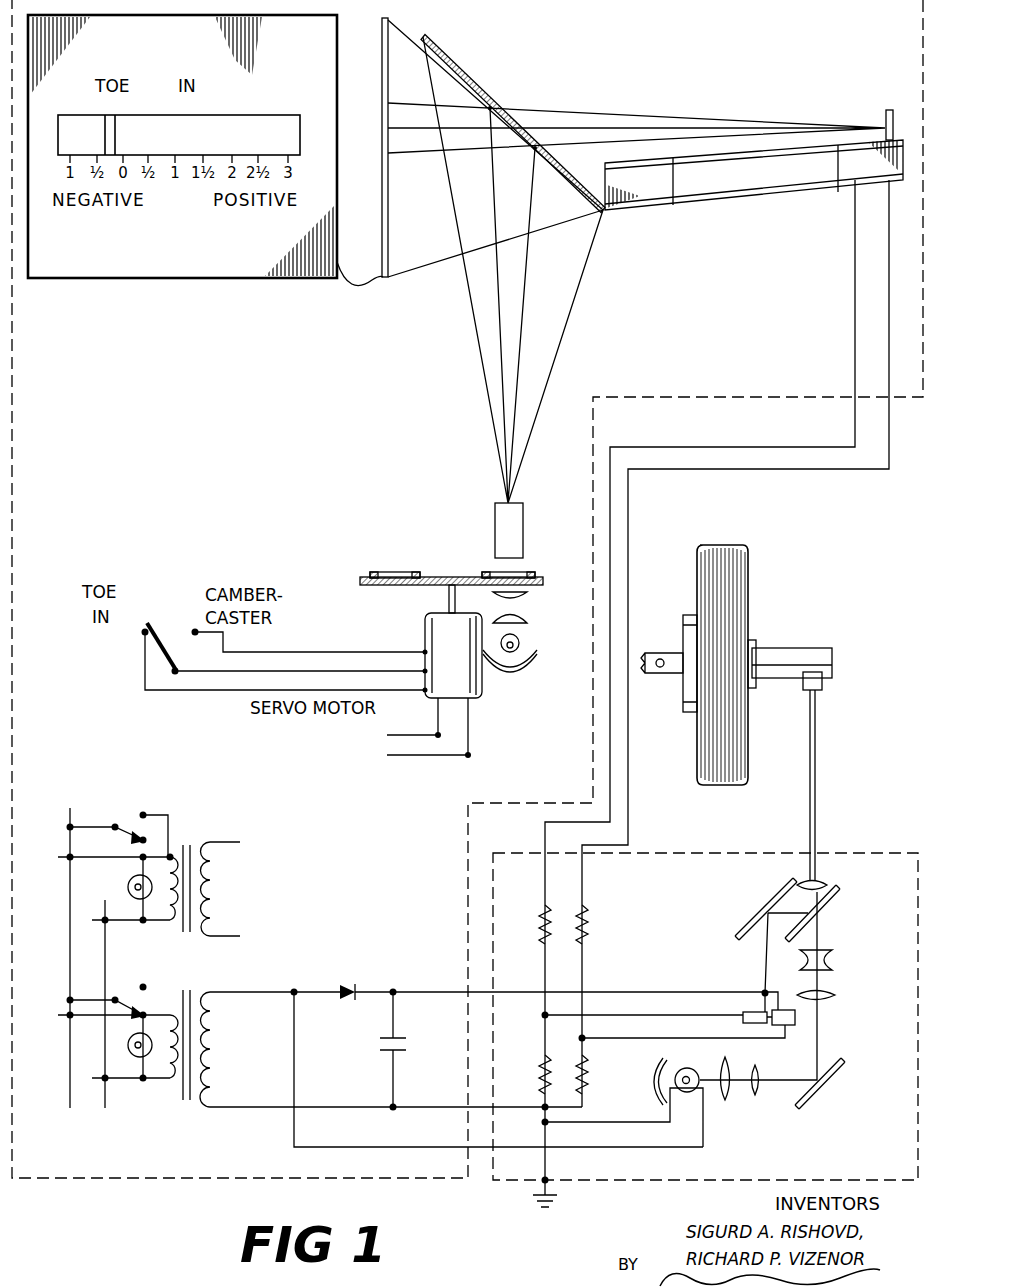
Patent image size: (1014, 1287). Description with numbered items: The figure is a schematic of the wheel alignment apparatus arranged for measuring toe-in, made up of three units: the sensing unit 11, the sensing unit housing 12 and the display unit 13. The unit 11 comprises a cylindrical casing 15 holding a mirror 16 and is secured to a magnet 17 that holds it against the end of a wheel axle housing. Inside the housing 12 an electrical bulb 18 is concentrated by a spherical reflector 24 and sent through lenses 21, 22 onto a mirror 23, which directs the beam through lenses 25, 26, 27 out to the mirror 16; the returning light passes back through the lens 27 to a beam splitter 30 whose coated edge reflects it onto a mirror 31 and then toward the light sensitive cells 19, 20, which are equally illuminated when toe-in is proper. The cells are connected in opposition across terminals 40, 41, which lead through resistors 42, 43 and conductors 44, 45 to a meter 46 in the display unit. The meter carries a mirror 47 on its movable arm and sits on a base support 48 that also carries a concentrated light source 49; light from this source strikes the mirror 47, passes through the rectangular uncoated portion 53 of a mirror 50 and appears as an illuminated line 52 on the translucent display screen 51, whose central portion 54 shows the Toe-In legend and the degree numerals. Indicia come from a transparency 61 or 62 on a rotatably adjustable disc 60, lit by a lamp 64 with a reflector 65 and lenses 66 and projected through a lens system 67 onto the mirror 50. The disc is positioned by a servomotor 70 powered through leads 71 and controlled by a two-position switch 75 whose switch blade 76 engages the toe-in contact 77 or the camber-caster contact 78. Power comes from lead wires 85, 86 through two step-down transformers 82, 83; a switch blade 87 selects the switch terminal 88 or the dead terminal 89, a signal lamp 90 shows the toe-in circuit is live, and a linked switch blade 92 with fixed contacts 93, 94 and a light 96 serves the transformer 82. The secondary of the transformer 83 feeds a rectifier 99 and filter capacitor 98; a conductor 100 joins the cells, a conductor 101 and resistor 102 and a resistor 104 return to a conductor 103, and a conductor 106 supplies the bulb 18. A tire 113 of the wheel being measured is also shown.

The sensing unit 11 is at (858, 620).
The sensing unit housing 12 is at (862, 852).
The display unit 13 is at (762, 397).
The cylindrical casing 15 is at (800, 649).
The mirror 16 is at (822, 683).
The magnet 17 is at (757, 648).
The electrical bulb 18 is at (697, 1092).
The light sensitive cell 19 is at (752, 1010).
The light sensitive cell 20 is at (797, 1018).
The lens 21 is at (728, 1097).
The lens 22 is at (763, 1093).
The mirror 23 is at (840, 1068).
The spherical reflector 24 is at (655, 1073).
The lens 25 is at (835, 996).
The lens 26 is at (835, 958).
The lens 27 is at (830, 884).
The beam splitter 30 is at (825, 907).
The mirror 31 is at (790, 886).
The terminal 40 is at (543, 1017).
The terminal 41 is at (584, 1036).
The resistor 42 is at (542, 925).
The resistor 43 is at (589, 921).
The conductor 44 is at (612, 497).
The conductor 45 is at (630, 535).
The meter 46 is at (852, 160).
The mirror 47 is at (890, 108).
The base support 48 is at (735, 180).
The light source 49 is at (655, 190).
The mirror 50 is at (467, 75).
The display screen 51 is at (383, 278).
The illuminated line 52 is at (104, 122).
The uncoated portion 53 is at (535, 148).
The central portion 54 is at (270, 115).
The rotatably adjustable disc 60 is at (445, 575).
The transparency 61 is at (520, 572).
The transparency 62 is at (390, 572).
The lamp 64 is at (520, 643).
The reflector 65 is at (535, 658).
The lenses 66 is at (522, 615).
The lens system 67 is at (523, 515).
The servomotor 70 is at (485, 675).
The leads 71 is at (406, 757).
The two-position switch 75 is at (152, 578).
The switch blade 76 is at (168, 662).
The fixed contact 77 is at (142, 635).
The fixed contact 78 is at (194, 630).
The transformer 82 is at (220, 825).
The transformer 83 is at (186, 1115).
The lead wire 85 is at (105, 1098).
The lead wire 86 is at (68, 935).
The switch blade 87 is at (132, 1004).
The switch terminal 88 is at (145, 1013).
The dead terminal 89 is at (145, 985).
The signal lamp 90 is at (135, 1057).
The switch blade 92 is at (127, 825).
The fixed contact 93 is at (143, 813).
The fixed contact 94 is at (145, 839).
The light 96 is at (127, 888).
The filter capacitor 98 is at (382, 1045).
The rectifier 99 is at (349, 982).
The conductor 100 is at (430, 990).
The conductor 101 is at (637, 1013).
The resistor 102 is at (540, 1069).
The conductor 103 is at (446, 1108).
The resistor 104 is at (590, 1077).
The conductor 106 is at (292, 1063).
The tire 113 is at (748, 551).